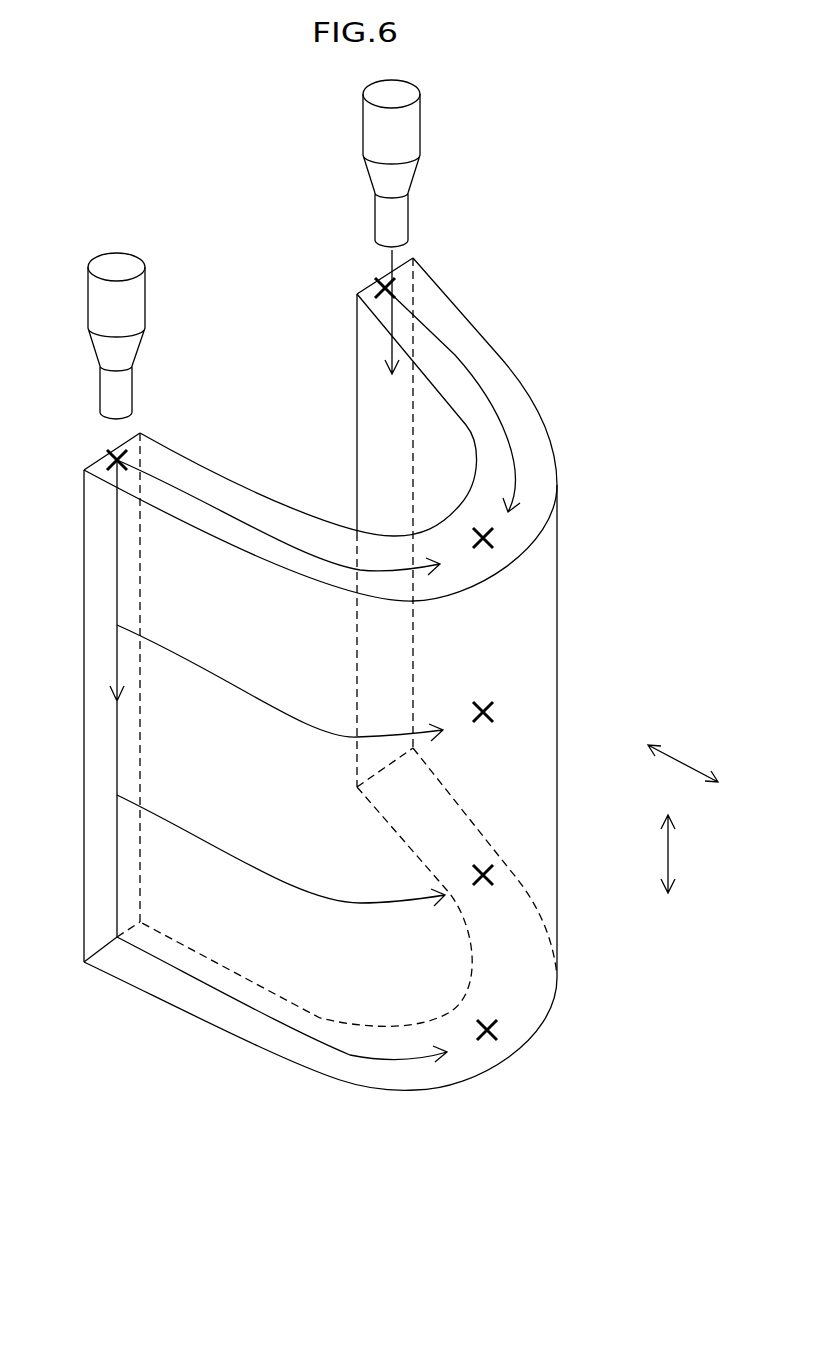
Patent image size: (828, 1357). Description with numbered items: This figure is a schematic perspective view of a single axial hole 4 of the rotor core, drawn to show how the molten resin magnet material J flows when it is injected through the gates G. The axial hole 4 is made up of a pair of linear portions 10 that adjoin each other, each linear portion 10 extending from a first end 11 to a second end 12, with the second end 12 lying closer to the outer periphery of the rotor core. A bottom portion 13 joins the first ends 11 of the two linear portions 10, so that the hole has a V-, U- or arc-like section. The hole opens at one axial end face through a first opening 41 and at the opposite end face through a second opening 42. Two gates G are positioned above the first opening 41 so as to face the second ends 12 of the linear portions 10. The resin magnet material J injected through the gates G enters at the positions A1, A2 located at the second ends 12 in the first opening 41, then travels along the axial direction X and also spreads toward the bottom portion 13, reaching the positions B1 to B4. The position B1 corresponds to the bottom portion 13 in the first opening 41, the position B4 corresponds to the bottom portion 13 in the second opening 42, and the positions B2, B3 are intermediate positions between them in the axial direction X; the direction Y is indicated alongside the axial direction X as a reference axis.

The axial hole 4 is at (496, 363).
The linear portion 10 is at (276, 451).
The first end 11 is at (320, 535).
The second end 12 is at (147, 445).
The bottom portion 13 is at (453, 535).
The first opening 41 is at (531, 411).
The second opening 42 is at (423, 1077).
The gate G is at (400, 212).
The resin magnet material J is at (243, 523).
The position A1 is at (108, 457).
The position A2 is at (376, 287).
The position B1 is at (495, 538).
The position B2 is at (495, 712).
The position B3 is at (495, 875).
The position B4 is at (498, 1030).
The axial direction X is at (683, 855).
The direction Y is at (683, 743).